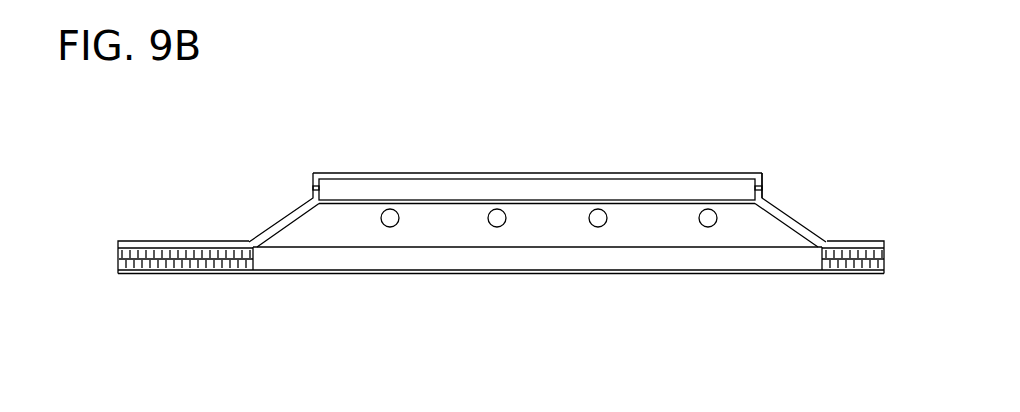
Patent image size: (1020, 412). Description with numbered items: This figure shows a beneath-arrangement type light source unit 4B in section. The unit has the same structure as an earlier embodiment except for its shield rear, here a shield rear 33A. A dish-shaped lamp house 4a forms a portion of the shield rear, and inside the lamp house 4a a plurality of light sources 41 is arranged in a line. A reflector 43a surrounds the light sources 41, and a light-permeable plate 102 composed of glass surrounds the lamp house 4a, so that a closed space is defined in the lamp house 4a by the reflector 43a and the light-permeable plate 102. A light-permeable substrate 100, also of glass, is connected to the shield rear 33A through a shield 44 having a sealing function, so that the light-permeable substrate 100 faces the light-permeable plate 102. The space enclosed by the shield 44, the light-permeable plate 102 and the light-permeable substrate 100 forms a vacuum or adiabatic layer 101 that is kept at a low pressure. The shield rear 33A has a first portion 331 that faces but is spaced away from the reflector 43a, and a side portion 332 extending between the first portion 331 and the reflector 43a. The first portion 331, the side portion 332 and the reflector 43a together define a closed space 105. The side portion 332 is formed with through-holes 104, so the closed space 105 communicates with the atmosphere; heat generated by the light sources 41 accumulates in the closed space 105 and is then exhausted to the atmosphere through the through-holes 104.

The light source unit 4B is at (545, 141).
The lamp house 4a is at (445, 217).
The light sources 41 is at (700, 212).
The reflector 43a is at (632, 203).
The shield 44 is at (165, 258).
The shield rear 33A is at (202, 248).
The light-permeable substrate 100 is at (593, 272).
The vacuum or adiabatic layer 101 is at (327, 258).
The light-permeable plate 102 is at (750, 247).
The through-holes 104 is at (313, 187).
The closed space 105 is at (503, 187).
The first portion 331 is at (598, 172).
The side portion 332 is at (762, 170).